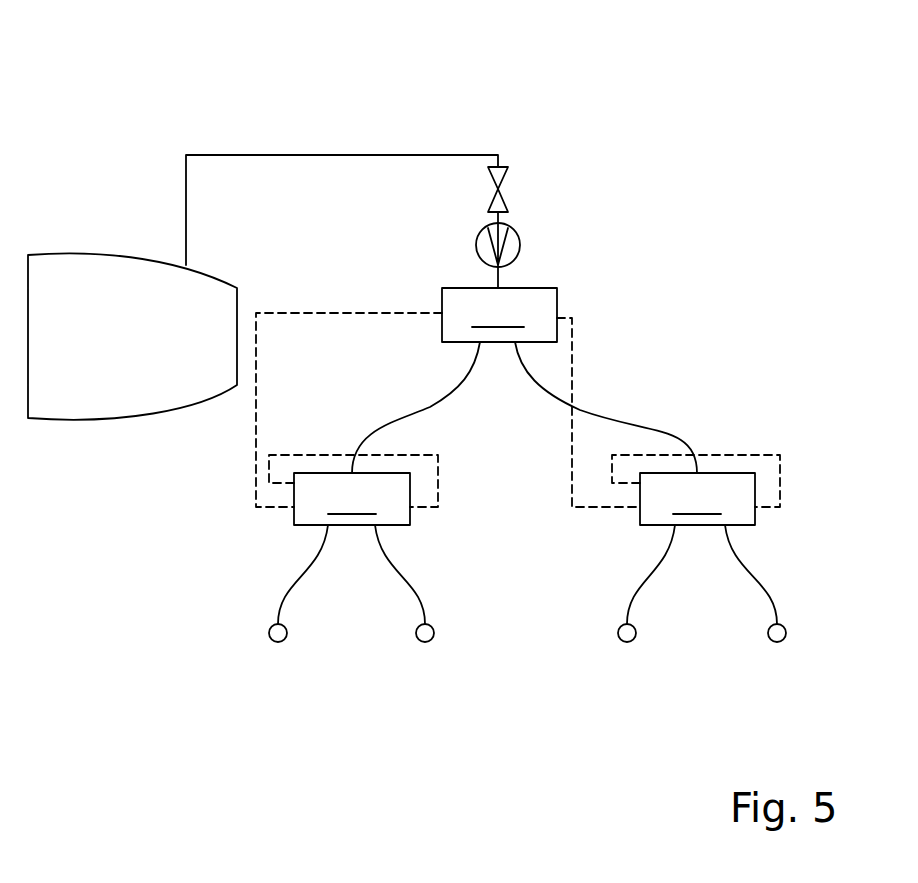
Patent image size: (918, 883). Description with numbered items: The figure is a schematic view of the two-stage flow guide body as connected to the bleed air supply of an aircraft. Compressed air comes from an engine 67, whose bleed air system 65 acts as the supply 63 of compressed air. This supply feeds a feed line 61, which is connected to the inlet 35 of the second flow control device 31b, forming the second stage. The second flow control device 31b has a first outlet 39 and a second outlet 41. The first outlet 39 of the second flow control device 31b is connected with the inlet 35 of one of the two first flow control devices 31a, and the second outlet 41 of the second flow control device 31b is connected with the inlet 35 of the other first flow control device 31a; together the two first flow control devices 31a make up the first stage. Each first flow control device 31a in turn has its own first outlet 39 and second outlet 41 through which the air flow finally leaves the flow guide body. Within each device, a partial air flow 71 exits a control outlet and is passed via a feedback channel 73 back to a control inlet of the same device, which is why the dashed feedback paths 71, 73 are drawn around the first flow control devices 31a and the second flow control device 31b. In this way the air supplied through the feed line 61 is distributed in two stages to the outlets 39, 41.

The first flow control device 31a is at (524, 499).
The second flow control device 31b is at (499, 315).
The inlet 35 is at (498, 276).
The first outlet 39 is at (447, 395).
The second outlet 41 is at (640, 420).
The feed line 61 is at (378, 154).
The supply of compressed air 63 is at (356, 143).
The bleed air system 65 is at (252, 118).
The engine 67 is at (113, 395).
The partial air flow 71 is at (550, 432).
The feedback channel 73 is at (256, 365).